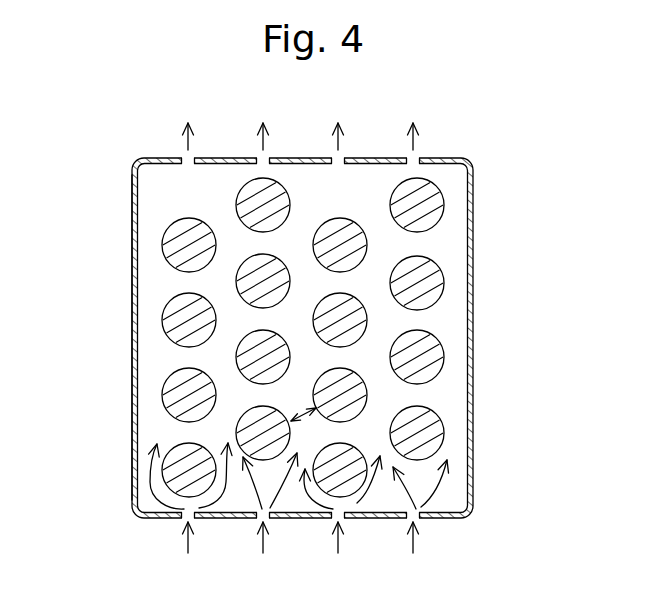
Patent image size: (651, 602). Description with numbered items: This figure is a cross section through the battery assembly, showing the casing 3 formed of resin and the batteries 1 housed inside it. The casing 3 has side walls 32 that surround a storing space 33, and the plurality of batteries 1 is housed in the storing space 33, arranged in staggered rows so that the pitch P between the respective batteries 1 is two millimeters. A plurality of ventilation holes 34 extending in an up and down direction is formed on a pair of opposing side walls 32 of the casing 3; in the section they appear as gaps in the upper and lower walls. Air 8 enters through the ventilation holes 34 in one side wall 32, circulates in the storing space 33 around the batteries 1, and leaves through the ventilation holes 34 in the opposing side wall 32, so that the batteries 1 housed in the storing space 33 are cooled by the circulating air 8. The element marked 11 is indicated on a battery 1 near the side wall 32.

The battery 1 is at (433, 275).
The casing 3 is at (473, 357).
The air 8 is at (413, 545).
The tube outer surface 11 is at (445, 431).
The side wall 32 is at (132, 373).
The storing space 33 is at (202, 285).
The ventilation hole 34 is at (420, 161).
The pitch P is at (303, 422).